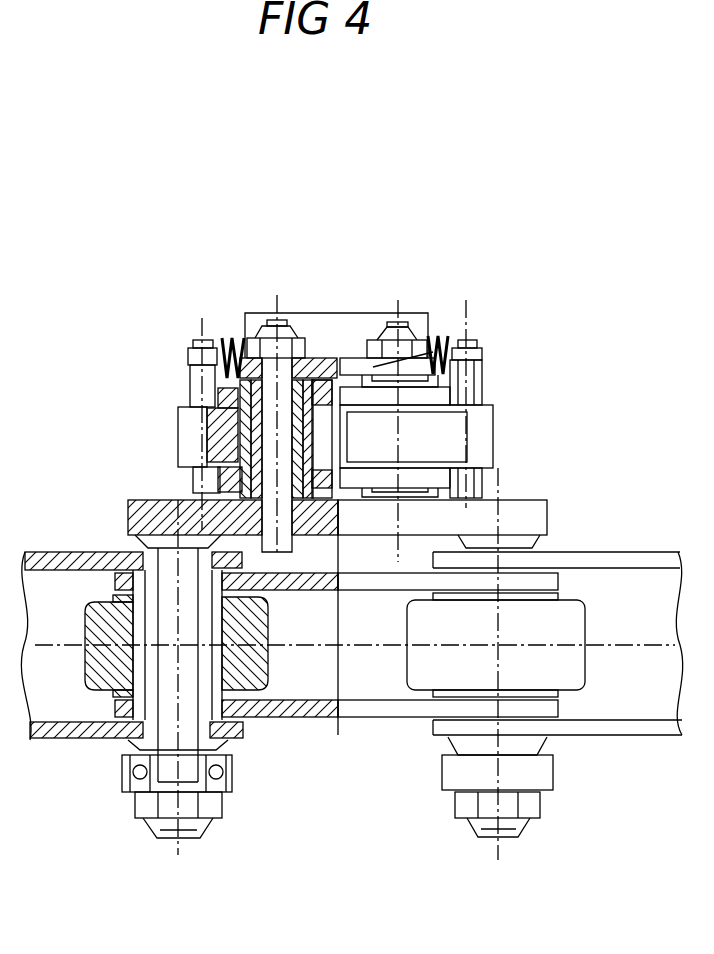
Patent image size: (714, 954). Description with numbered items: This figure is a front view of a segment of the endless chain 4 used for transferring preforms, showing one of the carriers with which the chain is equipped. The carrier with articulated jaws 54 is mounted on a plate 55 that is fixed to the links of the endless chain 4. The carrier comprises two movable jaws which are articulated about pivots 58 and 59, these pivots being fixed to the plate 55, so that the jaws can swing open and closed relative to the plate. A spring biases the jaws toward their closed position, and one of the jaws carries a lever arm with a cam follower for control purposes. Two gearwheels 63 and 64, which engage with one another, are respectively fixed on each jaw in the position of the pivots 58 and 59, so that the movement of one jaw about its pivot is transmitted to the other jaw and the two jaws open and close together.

The endless chain 4 is at (535, 662).
The carrier with articulated jaws 54 is at (477, 340).
The plate 55 is at (510, 518).
The pivot 58 is at (278, 450).
The pivot 59 is at (423, 312).
The gearwheel 63 is at (222, 430).
The gearwheel 64 is at (432, 440).